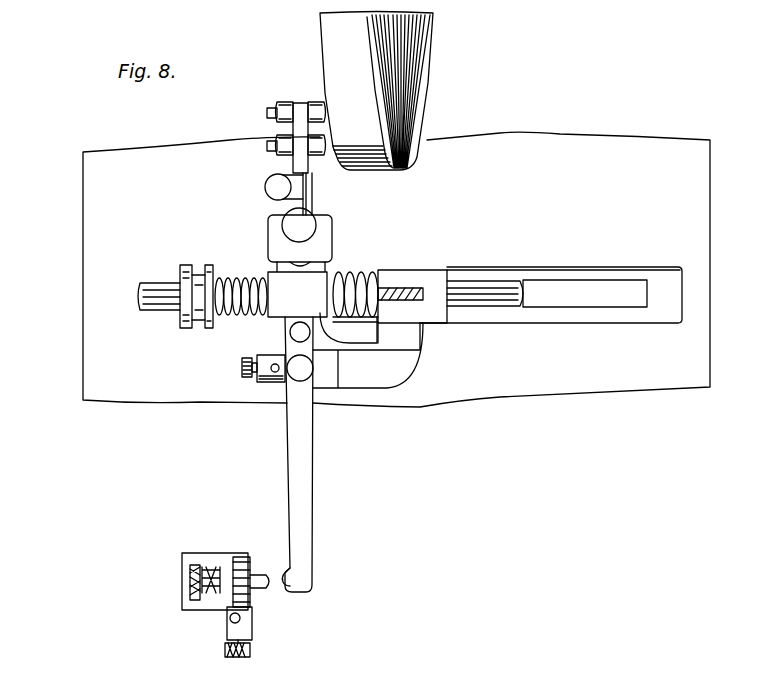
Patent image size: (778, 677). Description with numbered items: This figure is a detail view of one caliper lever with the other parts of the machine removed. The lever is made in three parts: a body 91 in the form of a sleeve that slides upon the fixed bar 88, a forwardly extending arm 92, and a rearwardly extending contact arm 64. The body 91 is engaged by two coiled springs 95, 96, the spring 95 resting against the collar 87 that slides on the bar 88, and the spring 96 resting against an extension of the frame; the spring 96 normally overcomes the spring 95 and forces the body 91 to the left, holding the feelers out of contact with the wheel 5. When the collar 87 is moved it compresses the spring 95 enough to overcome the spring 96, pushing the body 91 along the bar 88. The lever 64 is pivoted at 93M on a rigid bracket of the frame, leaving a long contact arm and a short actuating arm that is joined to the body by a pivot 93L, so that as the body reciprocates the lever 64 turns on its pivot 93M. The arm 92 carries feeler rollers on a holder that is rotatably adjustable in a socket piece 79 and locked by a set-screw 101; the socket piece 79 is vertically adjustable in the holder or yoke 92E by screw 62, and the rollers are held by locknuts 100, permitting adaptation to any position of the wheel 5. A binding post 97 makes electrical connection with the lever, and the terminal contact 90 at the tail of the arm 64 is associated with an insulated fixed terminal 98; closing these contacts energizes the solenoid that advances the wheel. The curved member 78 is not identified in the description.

The wheel 5 is at (420, 75).
The screw 62 is at (282, 225).
The rearwardly extending contact arm 64 is at (307, 468).
The lever 78 is at (385, 377).
The socket piece 79 is at (310, 190).
The collar 87 is at (200, 282).
The fixed bar 88 is at (165, 292).
The terminal contact 90 is at (270, 576).
The body 91 is at (340, 348).
The forwardly extending arm 92 is at (293, 164).
The holder or yoke 92E is at (315, 240).
The pivot 93L is at (292, 334).
The pivot 93M is at (271, 394).
The coiled spring 95 is at (238, 284).
The coiled spring 96 is at (348, 277).
The binding post 97 is at (257, 378).
The insulated fixed terminal 98 is at (228, 626).
The locknuts 100 is at (312, 103).
The set-screw 101 is at (266, 189).